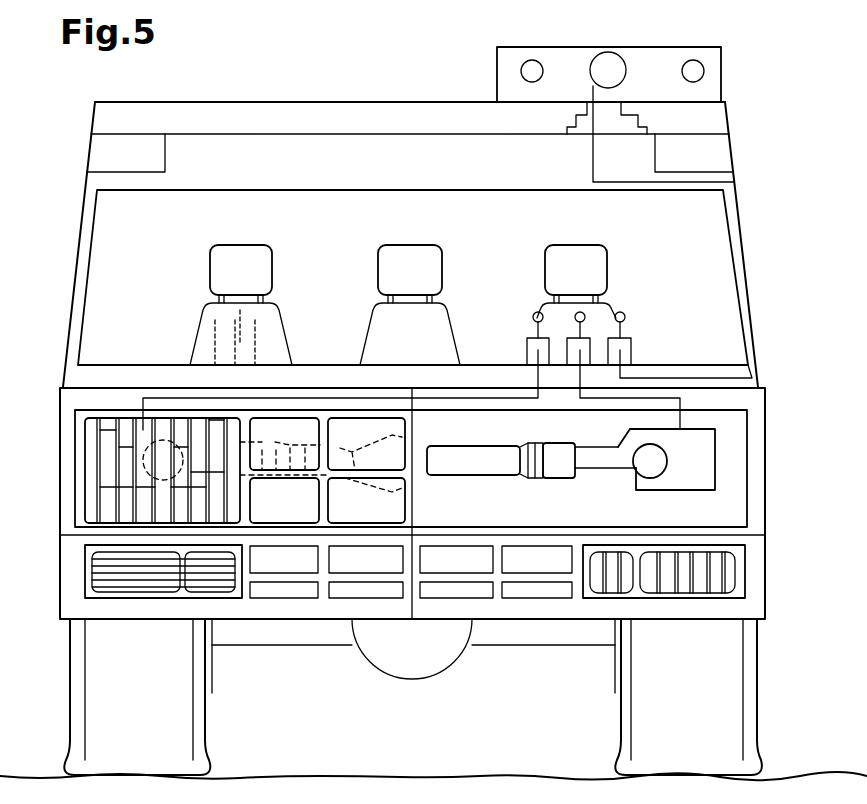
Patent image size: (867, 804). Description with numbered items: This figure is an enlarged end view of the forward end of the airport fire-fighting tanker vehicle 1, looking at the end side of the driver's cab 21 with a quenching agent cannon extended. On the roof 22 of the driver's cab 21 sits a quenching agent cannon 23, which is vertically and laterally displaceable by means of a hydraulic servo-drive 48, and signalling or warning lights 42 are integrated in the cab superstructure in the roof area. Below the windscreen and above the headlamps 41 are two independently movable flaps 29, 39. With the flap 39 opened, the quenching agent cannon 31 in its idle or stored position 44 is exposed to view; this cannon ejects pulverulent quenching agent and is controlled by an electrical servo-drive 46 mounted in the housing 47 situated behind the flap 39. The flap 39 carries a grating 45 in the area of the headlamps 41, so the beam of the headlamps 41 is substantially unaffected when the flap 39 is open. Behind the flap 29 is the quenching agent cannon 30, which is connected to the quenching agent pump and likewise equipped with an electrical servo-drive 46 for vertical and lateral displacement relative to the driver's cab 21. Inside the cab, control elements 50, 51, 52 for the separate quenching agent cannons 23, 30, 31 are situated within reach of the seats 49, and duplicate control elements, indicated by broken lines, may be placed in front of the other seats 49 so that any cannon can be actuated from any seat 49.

The airport fire-fighting tanker vehicle 1 is at (128, 91).
The driver's cab 21 is at (78, 238).
The roof 22 is at (303, 100).
The quenching agent cannon 23 is at (560, 44).
The flap 29 is at (82, 500).
The quenching agent cannon 30 is at (305, 462).
The quenching agent cannon 31 is at (593, 440).
The flap 39 is at (742, 578).
The headlamps 41 is at (683, 573).
The signalling or warning lights 42 is at (118, 155).
The idle or stored position 44 is at (476, 478).
The grating 45 is at (657, 575).
The electrical servo-drive 46 is at (127, 460).
The housing 47 is at (722, 505).
The hydraulic servo-drive 48 is at (655, 70).
The seats 49 is at (238, 262).
The control element 50 is at (542, 343).
The control element 51 is at (580, 342).
The control element 52 is at (627, 345).